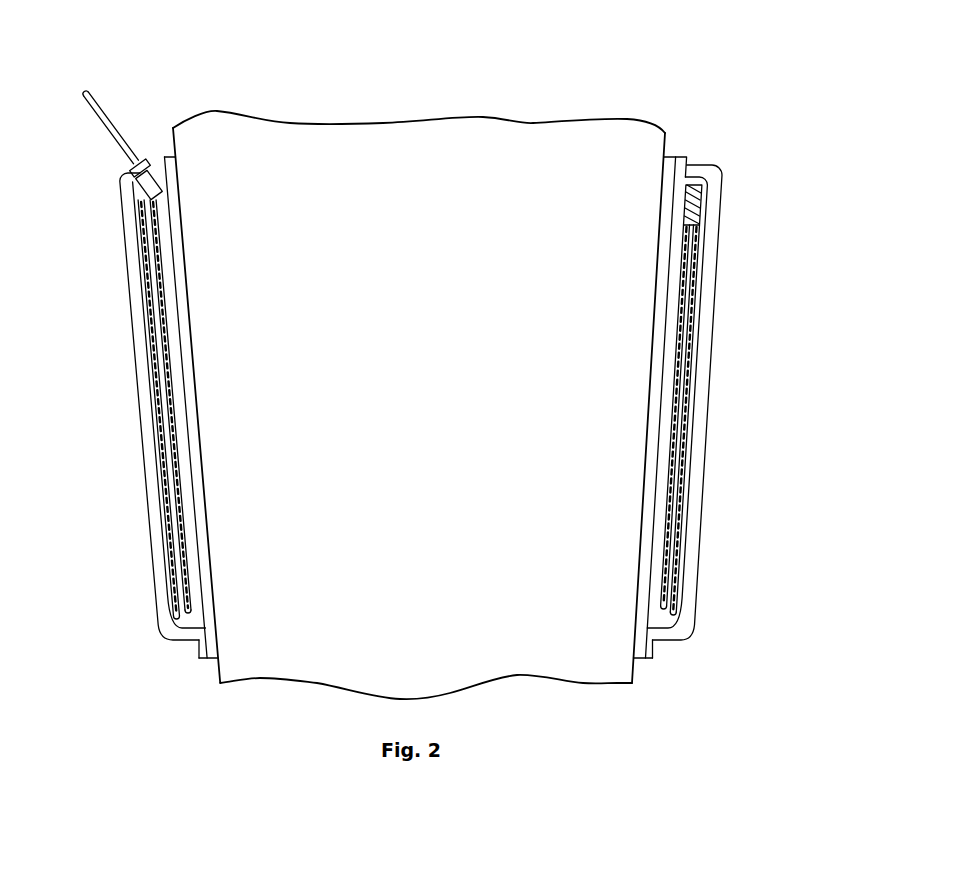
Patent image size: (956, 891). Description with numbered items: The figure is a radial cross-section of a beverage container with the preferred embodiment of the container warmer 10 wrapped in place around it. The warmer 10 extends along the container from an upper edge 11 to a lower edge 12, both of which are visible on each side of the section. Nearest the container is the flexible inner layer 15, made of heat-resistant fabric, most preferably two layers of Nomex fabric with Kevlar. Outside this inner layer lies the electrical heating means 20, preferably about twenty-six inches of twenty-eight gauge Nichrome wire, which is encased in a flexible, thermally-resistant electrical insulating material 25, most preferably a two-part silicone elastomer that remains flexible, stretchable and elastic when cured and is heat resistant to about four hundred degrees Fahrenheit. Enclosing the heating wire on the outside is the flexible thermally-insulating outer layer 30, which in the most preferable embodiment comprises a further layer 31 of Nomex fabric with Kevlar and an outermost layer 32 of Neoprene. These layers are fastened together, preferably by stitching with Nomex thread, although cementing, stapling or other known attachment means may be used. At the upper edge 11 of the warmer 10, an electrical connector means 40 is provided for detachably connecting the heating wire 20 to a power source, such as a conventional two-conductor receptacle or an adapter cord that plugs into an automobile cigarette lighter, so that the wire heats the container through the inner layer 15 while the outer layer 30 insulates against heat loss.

The container warmer 10 is at (74, 288).
The upper edge 11 is at (167, 157).
The lower edge 12 is at (201, 660).
The flexible inner layer 15 is at (190, 480).
The electrical heating means 20 is at (182, 532).
The flexible thermally-resistant electrical insulating material 25 is at (188, 616).
The flexible thermally-insulating outer layer 30 is at (147, 493).
The further layer of Nomex fabric with Kevlar 31 is at (173, 608).
The outermost layer of Neoprene 32 is at (160, 567).
The electrical connector means 40 is at (131, 171).